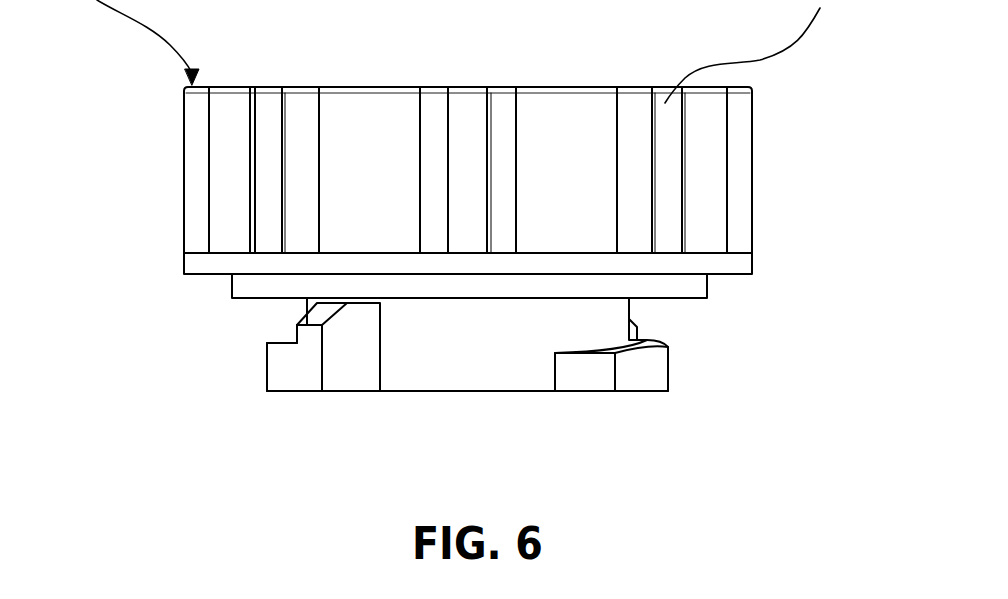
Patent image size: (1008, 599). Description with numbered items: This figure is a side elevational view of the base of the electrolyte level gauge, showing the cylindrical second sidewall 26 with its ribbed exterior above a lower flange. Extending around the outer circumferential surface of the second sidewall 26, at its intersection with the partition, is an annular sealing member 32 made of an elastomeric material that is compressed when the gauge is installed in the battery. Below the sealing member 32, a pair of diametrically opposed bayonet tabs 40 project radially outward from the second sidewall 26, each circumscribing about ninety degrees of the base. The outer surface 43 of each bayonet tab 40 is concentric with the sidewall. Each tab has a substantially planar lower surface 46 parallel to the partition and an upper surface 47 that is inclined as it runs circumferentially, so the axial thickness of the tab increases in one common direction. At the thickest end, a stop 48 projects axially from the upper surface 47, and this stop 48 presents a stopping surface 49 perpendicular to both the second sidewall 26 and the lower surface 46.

The second sidewall 26 is at (531, 342).
The annular sealing member 32 is at (423, 287).
The bayonet tab 40 is at (305, 368).
The outer surface 43 is at (267, 363).
The lower surface 46 is at (300, 391).
The upper surface 47 is at (647, 345).
The stop 48 is at (318, 317).
The stopping surface 49 is at (293, 338).